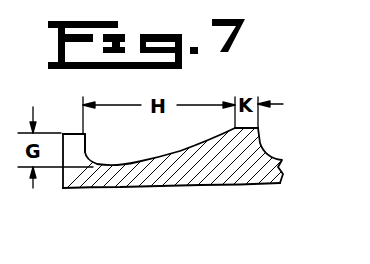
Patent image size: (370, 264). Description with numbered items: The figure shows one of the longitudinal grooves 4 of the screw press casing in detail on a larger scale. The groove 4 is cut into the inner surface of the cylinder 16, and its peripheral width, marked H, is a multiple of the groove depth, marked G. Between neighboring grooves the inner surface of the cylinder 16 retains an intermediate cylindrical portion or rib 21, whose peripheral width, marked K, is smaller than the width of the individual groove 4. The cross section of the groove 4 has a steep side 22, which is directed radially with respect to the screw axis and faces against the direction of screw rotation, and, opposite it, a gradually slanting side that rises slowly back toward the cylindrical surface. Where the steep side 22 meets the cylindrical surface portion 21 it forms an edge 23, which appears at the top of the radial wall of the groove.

The longitudinal groove 4 is at (143, 151).
The cylinder 16 is at (95, 188).
The intermediate cylindrical portion 21 is at (253, 128).
The steep side 22 is at (86, 145).
The edge 23 is at (84, 133).